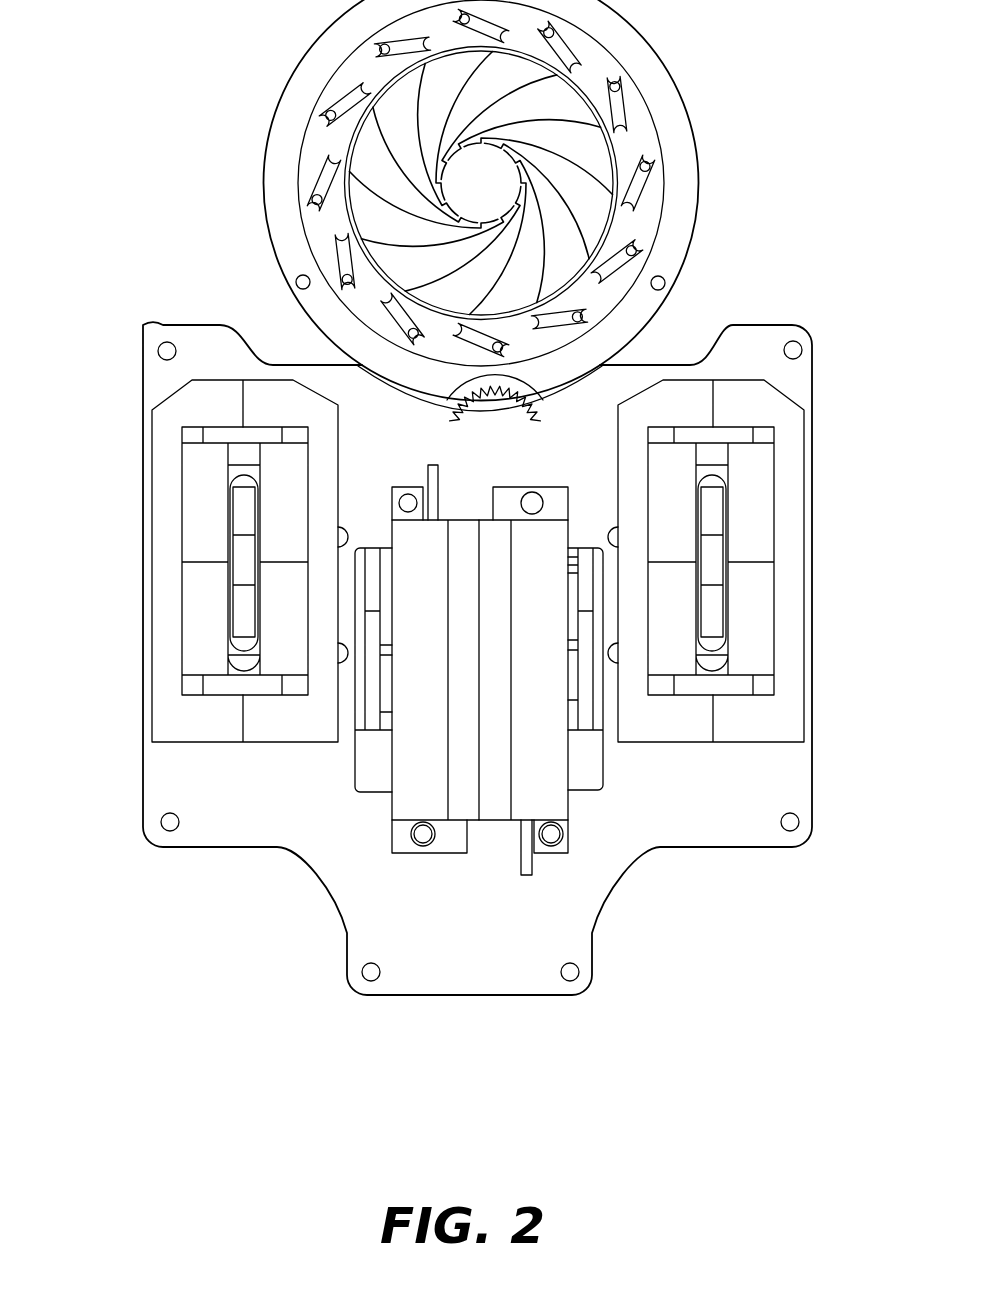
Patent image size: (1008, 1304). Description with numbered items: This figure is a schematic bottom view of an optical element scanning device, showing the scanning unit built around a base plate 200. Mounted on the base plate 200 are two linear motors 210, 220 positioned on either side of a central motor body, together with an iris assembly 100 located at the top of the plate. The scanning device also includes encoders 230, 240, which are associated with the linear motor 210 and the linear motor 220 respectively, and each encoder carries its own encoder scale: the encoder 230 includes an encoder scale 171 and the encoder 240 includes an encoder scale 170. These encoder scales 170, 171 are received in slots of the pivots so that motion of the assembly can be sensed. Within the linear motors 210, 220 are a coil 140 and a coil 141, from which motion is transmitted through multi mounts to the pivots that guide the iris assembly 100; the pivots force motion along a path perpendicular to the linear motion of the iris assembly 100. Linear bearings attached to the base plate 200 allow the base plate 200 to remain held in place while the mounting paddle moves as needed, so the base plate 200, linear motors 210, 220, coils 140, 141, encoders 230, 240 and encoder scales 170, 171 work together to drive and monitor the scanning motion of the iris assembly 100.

The iris assembly 100 is at (650, 67).
The base plate 200 is at (745, 340).
The linear motor 210 is at (205, 402).
The linear motor 220 is at (787, 419).
The coil 140 is at (712, 553).
The coil 141 is at (243, 553).
The encoder scale 170 is at (585, 703).
The encoder scale 171 is at (370, 712).
The encoder 230 is at (408, 792).
The encoder 240 is at (537, 783).